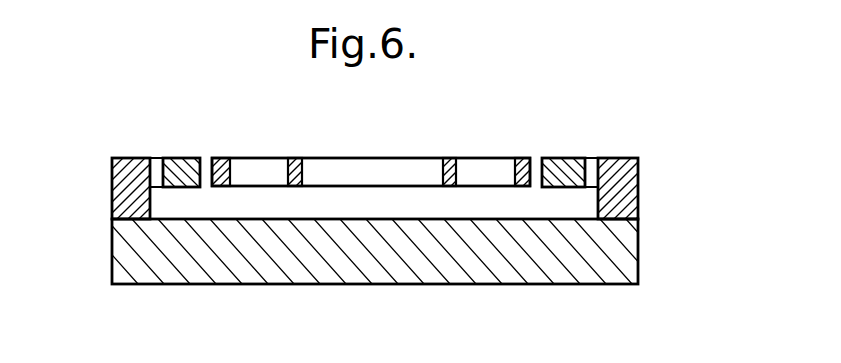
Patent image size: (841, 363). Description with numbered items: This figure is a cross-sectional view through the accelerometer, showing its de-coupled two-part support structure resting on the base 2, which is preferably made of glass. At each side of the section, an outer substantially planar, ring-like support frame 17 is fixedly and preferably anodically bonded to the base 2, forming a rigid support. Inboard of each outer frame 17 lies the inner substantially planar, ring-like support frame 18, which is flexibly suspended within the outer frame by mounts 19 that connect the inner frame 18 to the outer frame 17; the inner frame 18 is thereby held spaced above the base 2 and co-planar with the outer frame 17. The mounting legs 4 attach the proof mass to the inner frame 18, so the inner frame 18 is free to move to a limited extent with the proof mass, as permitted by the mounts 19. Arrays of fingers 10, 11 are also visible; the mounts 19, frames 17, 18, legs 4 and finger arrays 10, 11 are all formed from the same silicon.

The base 2 is at (592, 276).
The mounting legs 4 is at (220, 162).
The array of fingers 10 is at (450, 162).
The array of fingers 11 is at (295, 163).
The outer support frame 17 is at (125, 183).
The inner support frame 18 is at (183, 160).
The mounts 19 is at (155, 164).